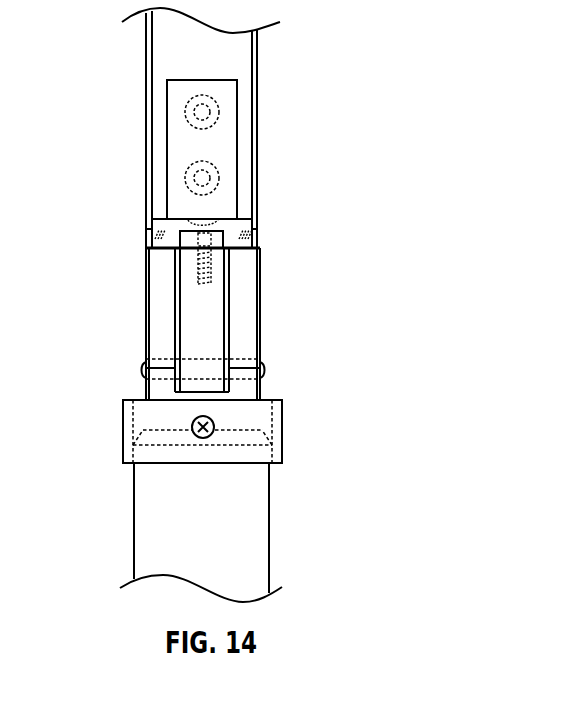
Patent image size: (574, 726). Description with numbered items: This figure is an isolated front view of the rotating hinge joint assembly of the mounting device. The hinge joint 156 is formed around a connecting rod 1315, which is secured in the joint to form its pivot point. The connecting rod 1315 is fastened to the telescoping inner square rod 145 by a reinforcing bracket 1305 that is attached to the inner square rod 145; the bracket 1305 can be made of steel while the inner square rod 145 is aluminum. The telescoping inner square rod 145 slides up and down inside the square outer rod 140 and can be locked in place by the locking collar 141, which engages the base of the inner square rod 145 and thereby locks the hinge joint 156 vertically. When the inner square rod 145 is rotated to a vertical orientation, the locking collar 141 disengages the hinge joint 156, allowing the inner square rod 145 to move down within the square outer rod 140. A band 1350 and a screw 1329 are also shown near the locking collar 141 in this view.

The telescoping inner square rod 145 is at (257, 83).
The reinforcing bracket 1305 is at (252, 125).
The hinge joint 156 is at (260, 292).
The connecting rod 1315 is at (174, 315).
The band 1350 is at (263, 368).
The screw 1329 is at (214, 426).
The locking collar 141 is at (123, 432).
The square outer rod 140 is at (270, 532).